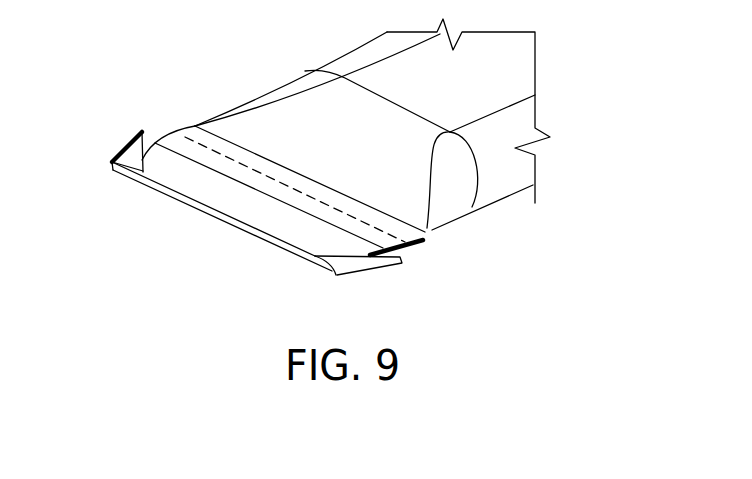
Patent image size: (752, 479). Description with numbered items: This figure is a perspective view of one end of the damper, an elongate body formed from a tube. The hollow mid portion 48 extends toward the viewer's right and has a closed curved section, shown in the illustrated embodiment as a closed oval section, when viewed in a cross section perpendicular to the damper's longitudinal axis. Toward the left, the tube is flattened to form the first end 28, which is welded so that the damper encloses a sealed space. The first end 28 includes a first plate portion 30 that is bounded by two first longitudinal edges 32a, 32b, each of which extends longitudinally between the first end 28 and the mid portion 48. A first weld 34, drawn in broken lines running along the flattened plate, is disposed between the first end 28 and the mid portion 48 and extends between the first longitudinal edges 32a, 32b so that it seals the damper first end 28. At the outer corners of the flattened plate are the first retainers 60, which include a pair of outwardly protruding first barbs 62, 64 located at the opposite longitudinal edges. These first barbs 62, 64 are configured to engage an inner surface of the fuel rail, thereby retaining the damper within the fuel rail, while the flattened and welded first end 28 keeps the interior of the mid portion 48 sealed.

The first end 28 is at (190, 209).
The first plate portion 30 is at (282, 194).
The first weld 34 is at (325, 205).
The first longitudinal edge 32a is at (193, 127).
The first longitudinal edge 32b is at (408, 249).
The mid portion 48 is at (441, 86).
The first retainers 60 is at (240, 215).
The first barb 62 is at (127, 147).
The first barb 64 is at (362, 274).